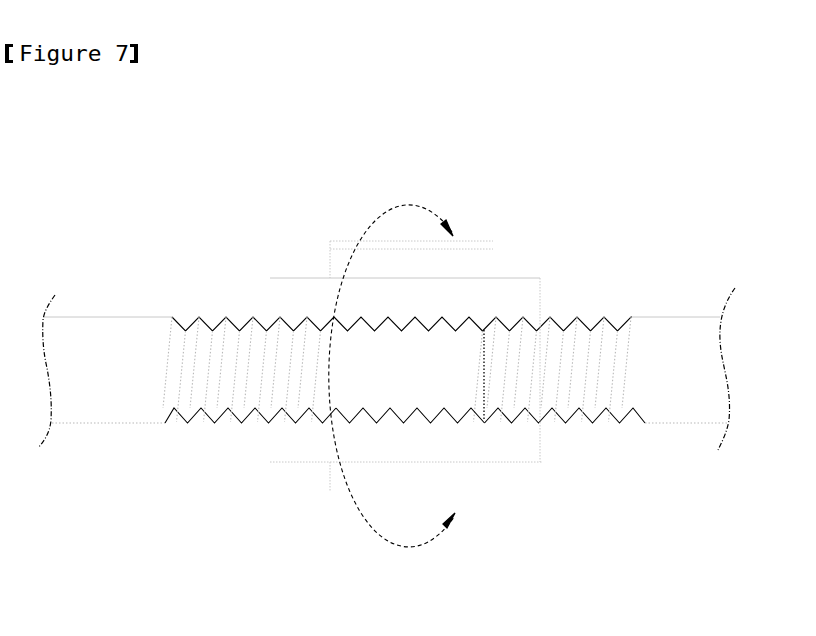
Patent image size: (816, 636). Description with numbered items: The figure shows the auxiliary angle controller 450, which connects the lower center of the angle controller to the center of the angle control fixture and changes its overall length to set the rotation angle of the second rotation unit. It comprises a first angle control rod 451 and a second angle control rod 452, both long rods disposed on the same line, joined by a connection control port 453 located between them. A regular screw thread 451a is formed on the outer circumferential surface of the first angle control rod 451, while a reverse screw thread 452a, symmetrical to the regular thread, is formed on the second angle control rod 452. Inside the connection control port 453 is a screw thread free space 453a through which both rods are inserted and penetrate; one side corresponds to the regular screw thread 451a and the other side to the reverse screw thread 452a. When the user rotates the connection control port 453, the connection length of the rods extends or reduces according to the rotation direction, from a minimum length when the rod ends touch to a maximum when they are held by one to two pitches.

The auxiliary angle controller 450 is at (65, 143).
The first angle control rod 451 is at (129, 316).
The regular screw thread 451a is at (219, 330).
The second angle control rod 452 is at (679, 316).
The reverse screw thread 452a is at (564, 326).
The connection control port 453 is at (348, 242).
The screw thread free space 453a is at (410, 355).